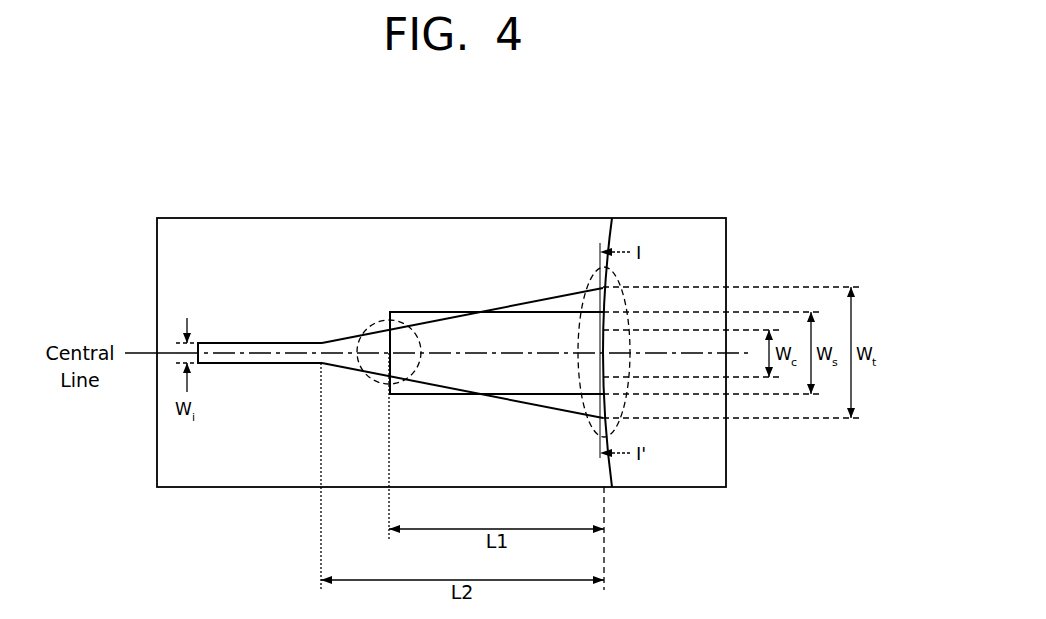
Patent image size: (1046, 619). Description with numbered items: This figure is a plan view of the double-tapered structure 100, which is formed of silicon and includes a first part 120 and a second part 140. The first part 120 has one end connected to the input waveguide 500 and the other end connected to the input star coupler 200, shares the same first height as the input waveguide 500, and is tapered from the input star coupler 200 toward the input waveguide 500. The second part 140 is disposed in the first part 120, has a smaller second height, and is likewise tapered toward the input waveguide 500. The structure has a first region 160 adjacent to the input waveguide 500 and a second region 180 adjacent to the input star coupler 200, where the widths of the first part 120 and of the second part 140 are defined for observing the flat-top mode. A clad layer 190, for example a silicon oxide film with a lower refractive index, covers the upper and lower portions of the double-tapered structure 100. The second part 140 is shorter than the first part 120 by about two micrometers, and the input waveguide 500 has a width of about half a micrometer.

The double-tapered structure 100 is at (583, 159).
The first part 120 is at (505, 315).
The second part 140 is at (452, 352).
The first region 160 is at (375, 318).
The second region 180 is at (585, 307).
The clad layer 190 is at (316, 232).
The input star coupler 200 is at (680, 230).
The input waveguide 500 is at (238, 342).